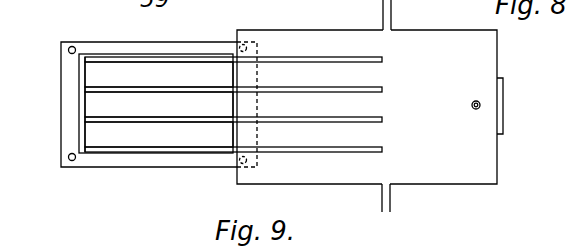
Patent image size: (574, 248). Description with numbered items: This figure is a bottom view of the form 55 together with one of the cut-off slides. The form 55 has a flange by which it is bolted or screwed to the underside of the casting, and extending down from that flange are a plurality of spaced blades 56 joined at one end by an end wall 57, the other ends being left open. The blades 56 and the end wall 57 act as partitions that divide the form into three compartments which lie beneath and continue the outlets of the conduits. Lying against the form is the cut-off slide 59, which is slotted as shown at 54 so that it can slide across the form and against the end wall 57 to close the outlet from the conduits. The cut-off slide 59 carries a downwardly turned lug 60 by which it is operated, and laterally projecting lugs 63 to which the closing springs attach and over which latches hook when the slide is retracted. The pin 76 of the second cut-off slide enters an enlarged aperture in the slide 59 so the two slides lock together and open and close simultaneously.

The slots 54 is at (359, 147).
The form 55 is at (61, 107).
The blades 56 is at (184, 63).
The end wall 57 is at (79, 113).
The cut-off slide 59 is at (367, 107).
The lug 60 is at (504, 95).
The lugs 63 is at (391, 7).
The pin 76 is at (471, 106).